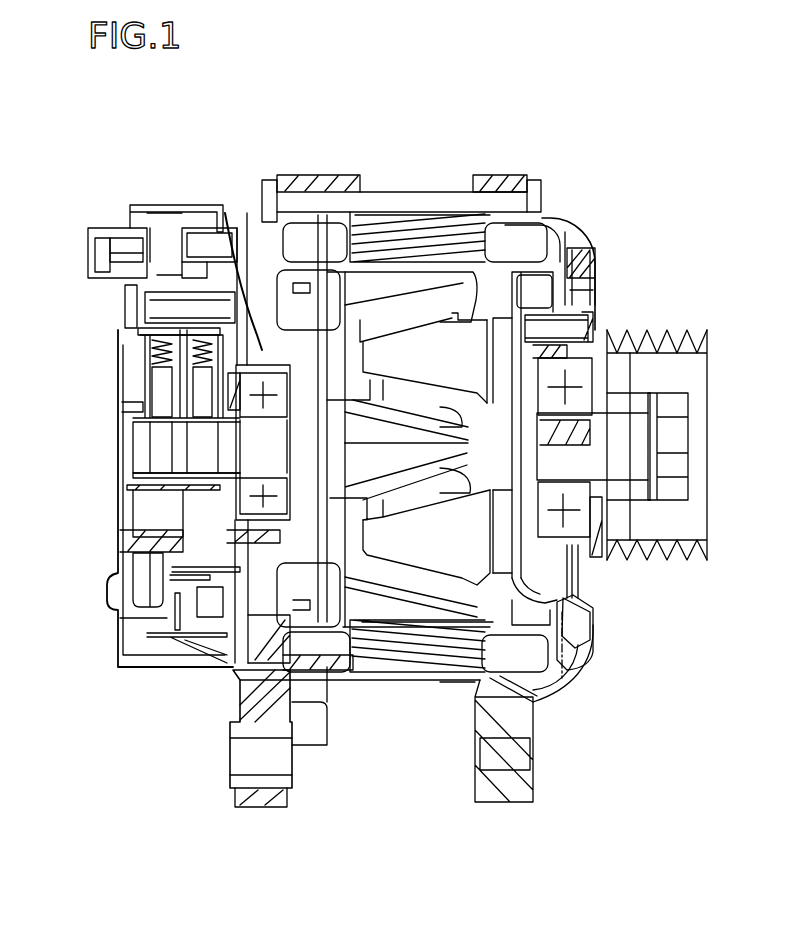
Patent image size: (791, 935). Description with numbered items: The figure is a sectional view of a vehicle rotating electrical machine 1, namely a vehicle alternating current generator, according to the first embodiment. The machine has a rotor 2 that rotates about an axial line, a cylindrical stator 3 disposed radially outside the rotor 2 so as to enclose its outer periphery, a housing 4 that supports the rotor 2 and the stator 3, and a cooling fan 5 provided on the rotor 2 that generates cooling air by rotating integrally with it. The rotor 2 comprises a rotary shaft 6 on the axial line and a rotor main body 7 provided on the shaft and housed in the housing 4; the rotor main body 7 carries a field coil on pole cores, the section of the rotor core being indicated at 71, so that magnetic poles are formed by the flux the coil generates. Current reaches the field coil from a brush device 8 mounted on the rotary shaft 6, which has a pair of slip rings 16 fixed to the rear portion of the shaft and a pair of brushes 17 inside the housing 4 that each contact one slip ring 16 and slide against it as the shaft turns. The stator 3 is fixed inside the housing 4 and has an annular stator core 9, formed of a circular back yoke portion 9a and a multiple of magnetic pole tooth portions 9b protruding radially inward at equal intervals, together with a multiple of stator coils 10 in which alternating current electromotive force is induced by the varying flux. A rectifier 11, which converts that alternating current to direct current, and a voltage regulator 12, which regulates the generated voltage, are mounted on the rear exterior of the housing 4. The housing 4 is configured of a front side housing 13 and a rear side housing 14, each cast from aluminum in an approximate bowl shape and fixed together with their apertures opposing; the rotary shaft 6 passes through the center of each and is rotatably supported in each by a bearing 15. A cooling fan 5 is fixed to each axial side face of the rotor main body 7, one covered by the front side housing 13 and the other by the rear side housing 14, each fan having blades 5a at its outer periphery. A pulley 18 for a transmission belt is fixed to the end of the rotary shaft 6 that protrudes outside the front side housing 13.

The vehicle rotating electrical machine 1 is at (674, 150).
The rotor 2 is at (330, 275).
The stator 3 is at (375, 683).
The housing 4 is at (498, 172).
The cooling fan 5 is at (540, 280).
The blade 5a is at (590, 607).
The rotary shaft 6 is at (625, 455).
The rotor main body 7 is at (410, 290).
The rotor core 71 is at (383, 287).
The brush device 8 is at (127, 325).
The stator core 9 is at (425, 665).
The back yoke portion 9a is at (458, 690).
The magnetic pole tooth portion 9b is at (433, 640).
The stator coil 10 is at (323, 658).
The rectifier 11 is at (133, 520).
The voltage regulator 12 is at (123, 287).
The front side housing 13 is at (527, 173).
The rear side housing 14 is at (273, 176).
The bearing 15 is at (270, 390).
The slip ring 16 is at (200, 437).
The brush 17 is at (165, 387).
The pulley 18 is at (662, 332).